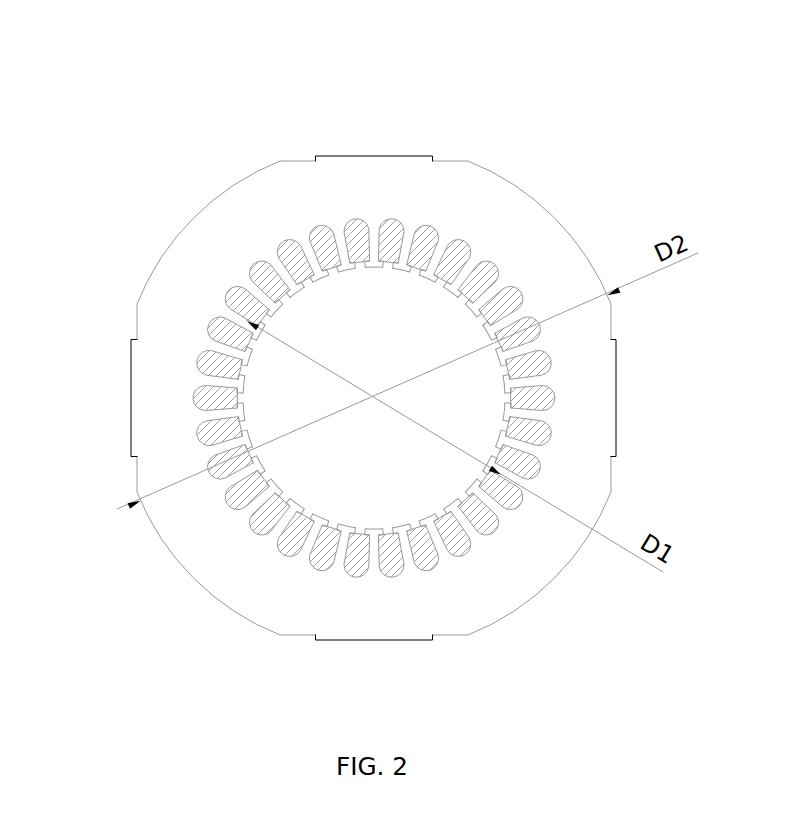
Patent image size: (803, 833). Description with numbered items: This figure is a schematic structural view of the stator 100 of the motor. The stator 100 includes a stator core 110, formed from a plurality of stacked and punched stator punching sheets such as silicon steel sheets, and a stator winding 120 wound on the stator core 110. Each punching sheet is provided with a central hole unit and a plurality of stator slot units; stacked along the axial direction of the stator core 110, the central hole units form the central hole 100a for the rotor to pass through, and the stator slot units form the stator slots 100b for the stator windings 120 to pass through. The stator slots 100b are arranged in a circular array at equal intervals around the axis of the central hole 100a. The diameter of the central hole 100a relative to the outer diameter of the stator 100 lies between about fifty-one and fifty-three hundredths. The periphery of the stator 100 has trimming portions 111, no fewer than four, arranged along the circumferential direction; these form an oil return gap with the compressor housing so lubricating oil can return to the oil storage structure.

The stator 100 is at (431, 44).
The central hole 100a is at (443, 308).
The stator slots 100b is at (207, 398).
The stator core 110 is at (245, 200).
The trimming portion 111 is at (374, 673).
The stator winding 120 is at (217, 332).